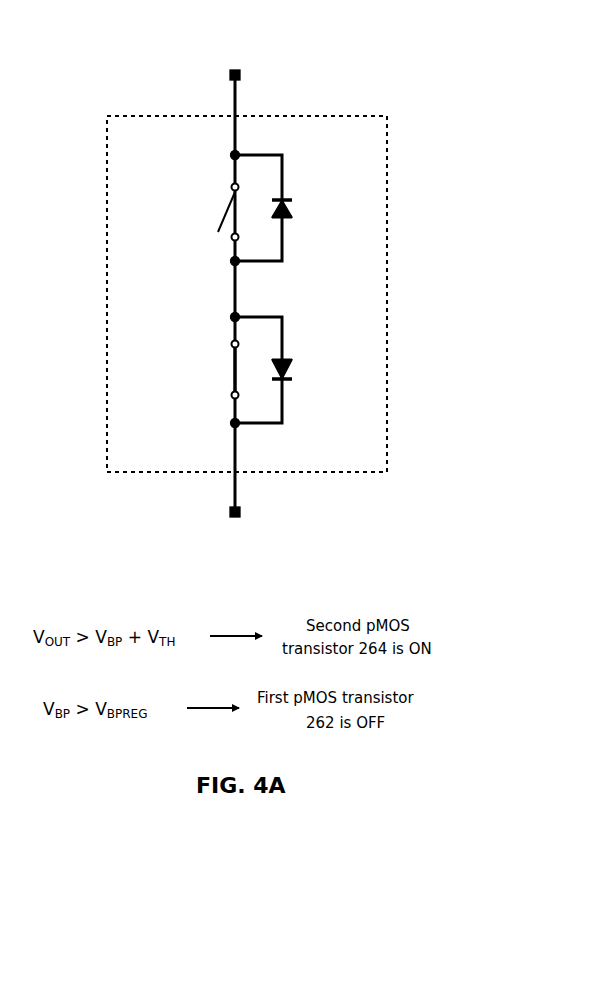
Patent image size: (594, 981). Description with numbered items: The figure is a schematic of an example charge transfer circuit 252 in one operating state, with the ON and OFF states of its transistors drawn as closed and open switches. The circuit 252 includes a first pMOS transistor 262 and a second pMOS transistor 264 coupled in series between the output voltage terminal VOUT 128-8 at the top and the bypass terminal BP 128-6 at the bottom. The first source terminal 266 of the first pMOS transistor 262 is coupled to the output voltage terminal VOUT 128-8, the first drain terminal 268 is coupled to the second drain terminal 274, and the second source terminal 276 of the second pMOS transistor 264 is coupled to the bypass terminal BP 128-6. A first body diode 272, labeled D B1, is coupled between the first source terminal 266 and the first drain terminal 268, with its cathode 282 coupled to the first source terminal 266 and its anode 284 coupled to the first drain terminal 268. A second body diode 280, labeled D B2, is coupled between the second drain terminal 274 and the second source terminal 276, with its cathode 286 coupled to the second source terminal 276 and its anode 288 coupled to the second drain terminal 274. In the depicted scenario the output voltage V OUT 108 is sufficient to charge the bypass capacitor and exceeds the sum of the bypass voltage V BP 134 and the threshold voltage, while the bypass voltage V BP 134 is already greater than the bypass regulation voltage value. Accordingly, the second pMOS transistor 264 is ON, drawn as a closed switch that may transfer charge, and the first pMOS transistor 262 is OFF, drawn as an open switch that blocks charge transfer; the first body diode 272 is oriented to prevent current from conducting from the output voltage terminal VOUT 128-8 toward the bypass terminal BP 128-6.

The output voltage V_OUT 108 is at (252, 50).
The output voltage terminal VOUT 128-8 is at (229, 75).
The bypass terminal BP 128-6 is at (230, 511).
The bypass voltage V_BP 134 is at (221, 535).
The charge transfer circuit 252 is at (104, 122).
The first pMOS transistor 262 is at (201, 202).
The second pMOS transistor 264 is at (206, 371).
The first source terminal 266 is at (231, 155).
The first drain terminal 268 is at (231, 261).
The first body diode 272 is at (332, 204).
The second drain terminal 274 is at (231, 318).
The second source terminal 276 is at (231, 423).
The second body diode 280 is at (330, 367).
The cathode of first body diode 282 is at (286, 199).
The anode of first body diode 284 is at (286, 219).
The cathode of second body diode 286 is at (286, 381).
The anode of second body diode 288 is at (286, 359).